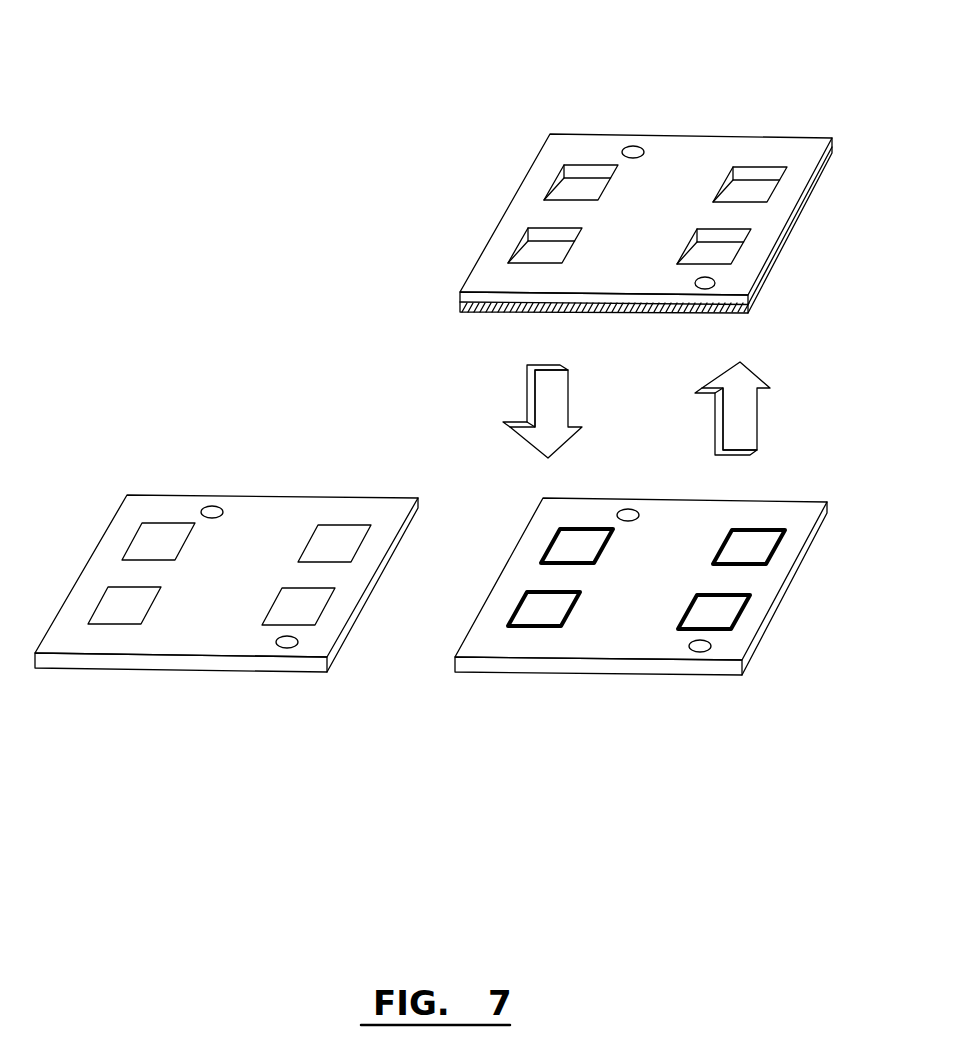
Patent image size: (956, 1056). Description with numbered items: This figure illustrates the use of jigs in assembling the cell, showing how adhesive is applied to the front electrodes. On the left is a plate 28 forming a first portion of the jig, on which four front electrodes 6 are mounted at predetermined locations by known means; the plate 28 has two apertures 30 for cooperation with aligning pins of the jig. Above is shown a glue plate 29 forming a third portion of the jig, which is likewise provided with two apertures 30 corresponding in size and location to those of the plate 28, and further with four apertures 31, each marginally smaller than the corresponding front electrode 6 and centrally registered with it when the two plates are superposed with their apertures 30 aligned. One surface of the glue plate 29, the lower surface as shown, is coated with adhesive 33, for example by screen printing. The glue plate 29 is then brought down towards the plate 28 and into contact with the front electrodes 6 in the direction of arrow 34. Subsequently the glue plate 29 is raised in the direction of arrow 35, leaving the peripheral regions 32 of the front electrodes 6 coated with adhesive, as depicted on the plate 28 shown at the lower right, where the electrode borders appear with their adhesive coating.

The front electrode 6 is at (340, 524).
The plate 28 is at (355, 585).
The glue plate 29 is at (605, 157).
The aperture 30 is at (633, 150).
The aperture 31 is at (759, 178).
The peripheral region 32 is at (777, 547).
The adhesive 33 is at (772, 508).
The arrow 34 is at (550, 407).
The arrow 35 is at (743, 415).